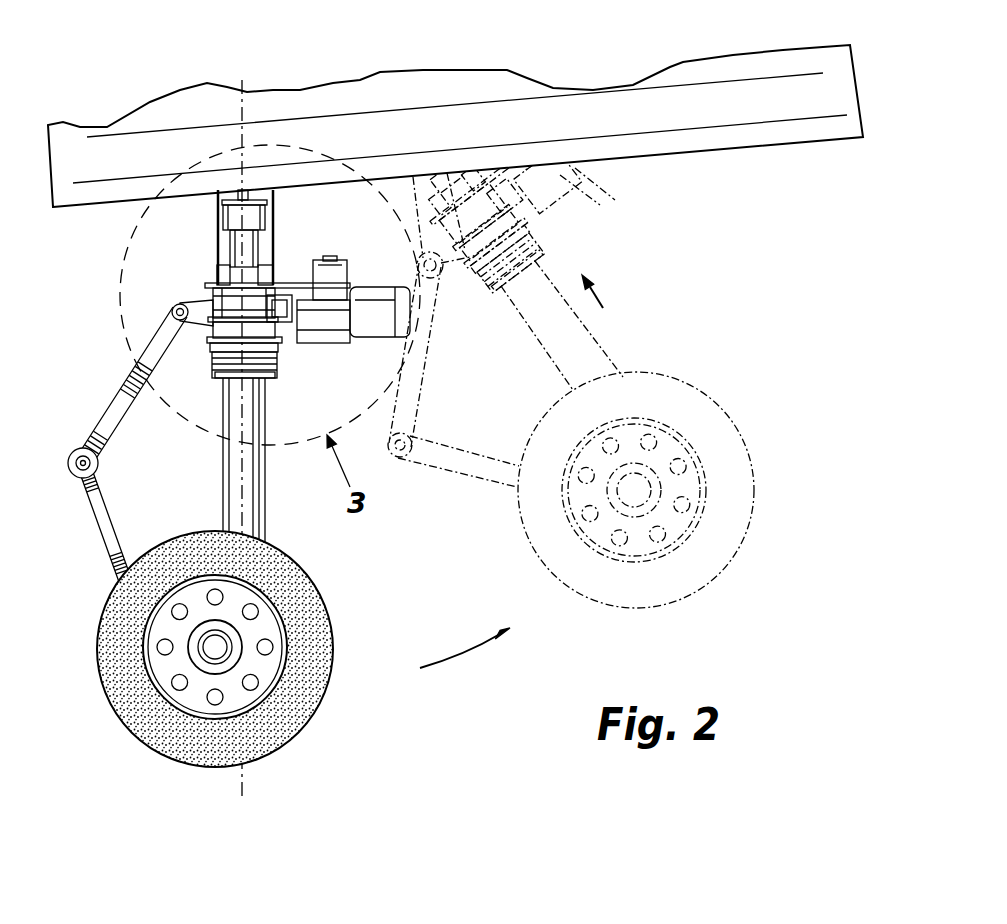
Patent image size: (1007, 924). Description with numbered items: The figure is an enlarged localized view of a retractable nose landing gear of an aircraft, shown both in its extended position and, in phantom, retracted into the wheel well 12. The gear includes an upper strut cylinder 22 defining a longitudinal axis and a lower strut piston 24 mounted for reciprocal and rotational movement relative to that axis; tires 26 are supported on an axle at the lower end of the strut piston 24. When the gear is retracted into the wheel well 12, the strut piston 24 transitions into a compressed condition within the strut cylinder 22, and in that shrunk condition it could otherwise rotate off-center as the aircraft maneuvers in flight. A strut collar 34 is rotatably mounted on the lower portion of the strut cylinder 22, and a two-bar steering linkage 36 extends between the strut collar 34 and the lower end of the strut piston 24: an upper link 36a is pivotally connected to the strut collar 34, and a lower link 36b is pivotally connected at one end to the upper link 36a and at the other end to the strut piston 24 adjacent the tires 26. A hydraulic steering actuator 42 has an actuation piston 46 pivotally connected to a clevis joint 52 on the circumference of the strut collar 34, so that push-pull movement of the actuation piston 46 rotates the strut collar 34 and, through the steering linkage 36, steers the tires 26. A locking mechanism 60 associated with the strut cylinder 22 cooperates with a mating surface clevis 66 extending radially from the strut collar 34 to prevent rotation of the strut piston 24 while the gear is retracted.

The wheel well 12 is at (688, 154).
The upper strut cylinder 22 is at (276, 192).
The lower strut piston 24 is at (265, 503).
The tires 26 is at (322, 705).
The strut/steering collar 34 is at (215, 325).
The two-bar steering linkage 36 is at (120, 441).
The upper link 36a is at (127, 422).
The lower link 36b is at (90, 503).
The right hydraulic steering actuator 42 is at (363, 323).
The actuation piston 46 is at (302, 323).
The clevis joint 52 is at (275, 293).
The locking mechanism 60 is at (237, 248).
The mating surface clevis 66 is at (208, 290).